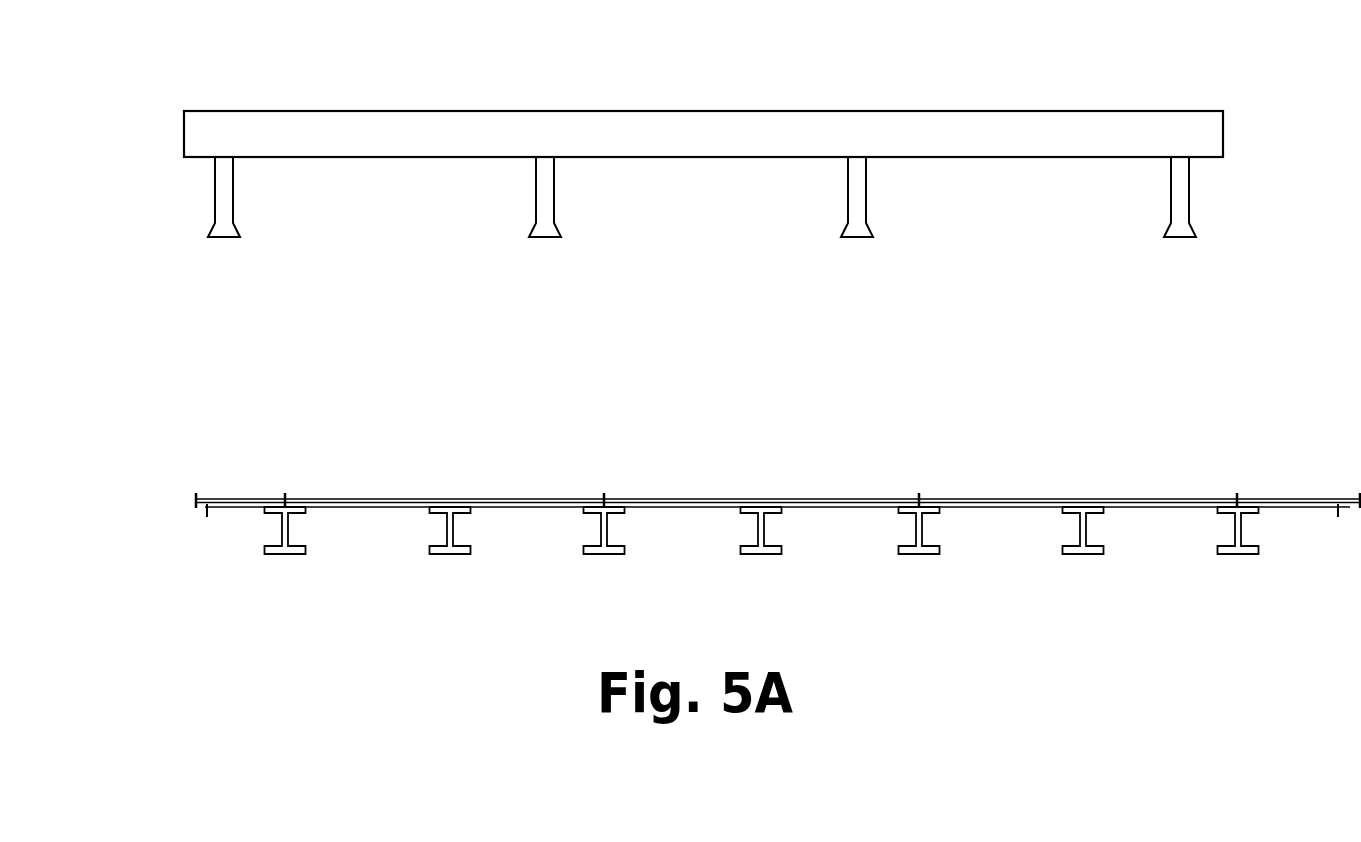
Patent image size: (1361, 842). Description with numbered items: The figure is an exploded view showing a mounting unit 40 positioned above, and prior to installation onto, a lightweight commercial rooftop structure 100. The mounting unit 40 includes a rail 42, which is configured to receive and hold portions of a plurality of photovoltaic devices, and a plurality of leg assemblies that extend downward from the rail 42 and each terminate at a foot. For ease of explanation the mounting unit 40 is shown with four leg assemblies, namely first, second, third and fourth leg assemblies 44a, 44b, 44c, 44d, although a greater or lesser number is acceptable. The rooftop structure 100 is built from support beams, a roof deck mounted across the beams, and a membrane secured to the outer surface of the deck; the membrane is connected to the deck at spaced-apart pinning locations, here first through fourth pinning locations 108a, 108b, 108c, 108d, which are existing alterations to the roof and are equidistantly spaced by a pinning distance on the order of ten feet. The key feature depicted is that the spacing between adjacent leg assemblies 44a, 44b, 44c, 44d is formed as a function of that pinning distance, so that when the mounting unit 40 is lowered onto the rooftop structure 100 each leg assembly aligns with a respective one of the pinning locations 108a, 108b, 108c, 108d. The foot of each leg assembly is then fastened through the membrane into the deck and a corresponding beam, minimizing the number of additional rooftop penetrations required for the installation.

The mounting unit 40 is at (709, 54).
The rail 42 is at (803, 126).
The first leg assembly 44a is at (247, 197).
The second leg assembly 44b is at (568, 197).
The third leg assembly 44c is at (880, 197).
The fourth leg assembly 44d is at (1203, 197).
The rooftop structure 100 is at (165, 502).
The first pinning location 108a is at (286, 494).
The second pinning location 108b is at (605, 494).
The third pinning location 108c is at (920, 494).
The fourth pinning location 108d is at (1238, 494).